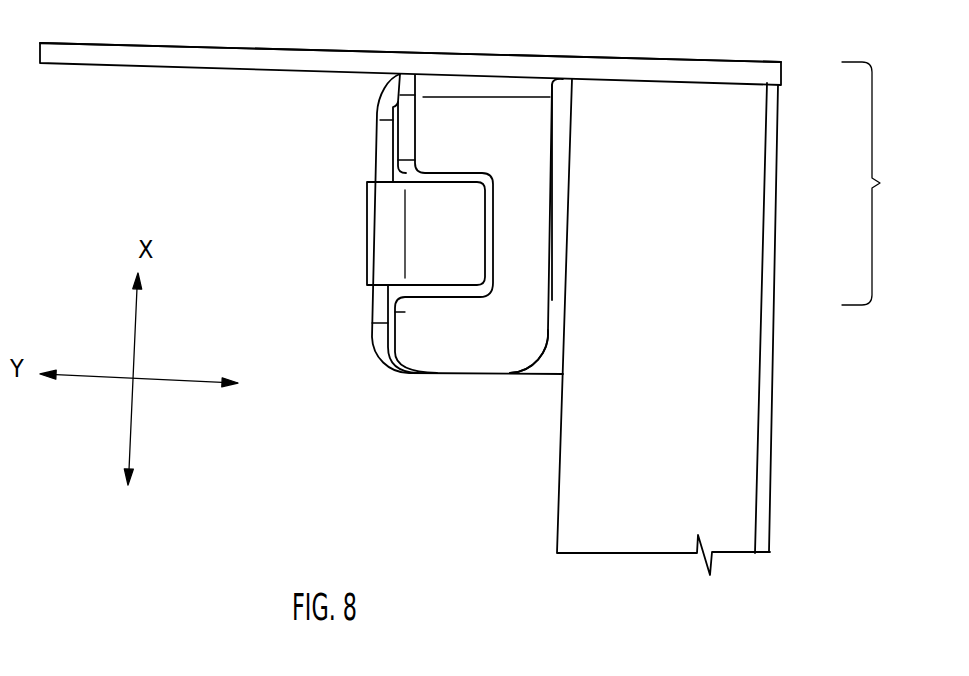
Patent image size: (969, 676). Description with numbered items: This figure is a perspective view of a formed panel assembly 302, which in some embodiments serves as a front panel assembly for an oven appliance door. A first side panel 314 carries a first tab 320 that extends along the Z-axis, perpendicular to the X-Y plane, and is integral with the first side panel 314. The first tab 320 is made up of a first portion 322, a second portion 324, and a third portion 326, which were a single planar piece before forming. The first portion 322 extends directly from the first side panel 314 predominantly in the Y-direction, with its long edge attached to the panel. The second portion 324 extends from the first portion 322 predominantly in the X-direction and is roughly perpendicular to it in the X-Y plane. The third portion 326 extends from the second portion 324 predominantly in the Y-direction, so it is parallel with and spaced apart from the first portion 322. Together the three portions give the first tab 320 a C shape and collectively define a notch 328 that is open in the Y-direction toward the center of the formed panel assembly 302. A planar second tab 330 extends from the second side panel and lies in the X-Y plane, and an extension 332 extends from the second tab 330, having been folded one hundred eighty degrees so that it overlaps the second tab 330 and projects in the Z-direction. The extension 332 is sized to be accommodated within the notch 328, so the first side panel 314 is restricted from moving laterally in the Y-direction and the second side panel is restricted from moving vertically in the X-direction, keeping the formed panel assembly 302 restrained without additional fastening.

The formed panel assembly 302 is at (464, 475).
The first side panel 314 is at (670, 437).
The first tab 320 is at (879, 183).
The first portion 322 is at (473, 123).
The second portion 324 is at (525, 232).
The third portion 326 is at (498, 330).
The notch 328 is at (425, 300).
The second tab 330 is at (374, 310).
The extension 332 is at (417, 225).